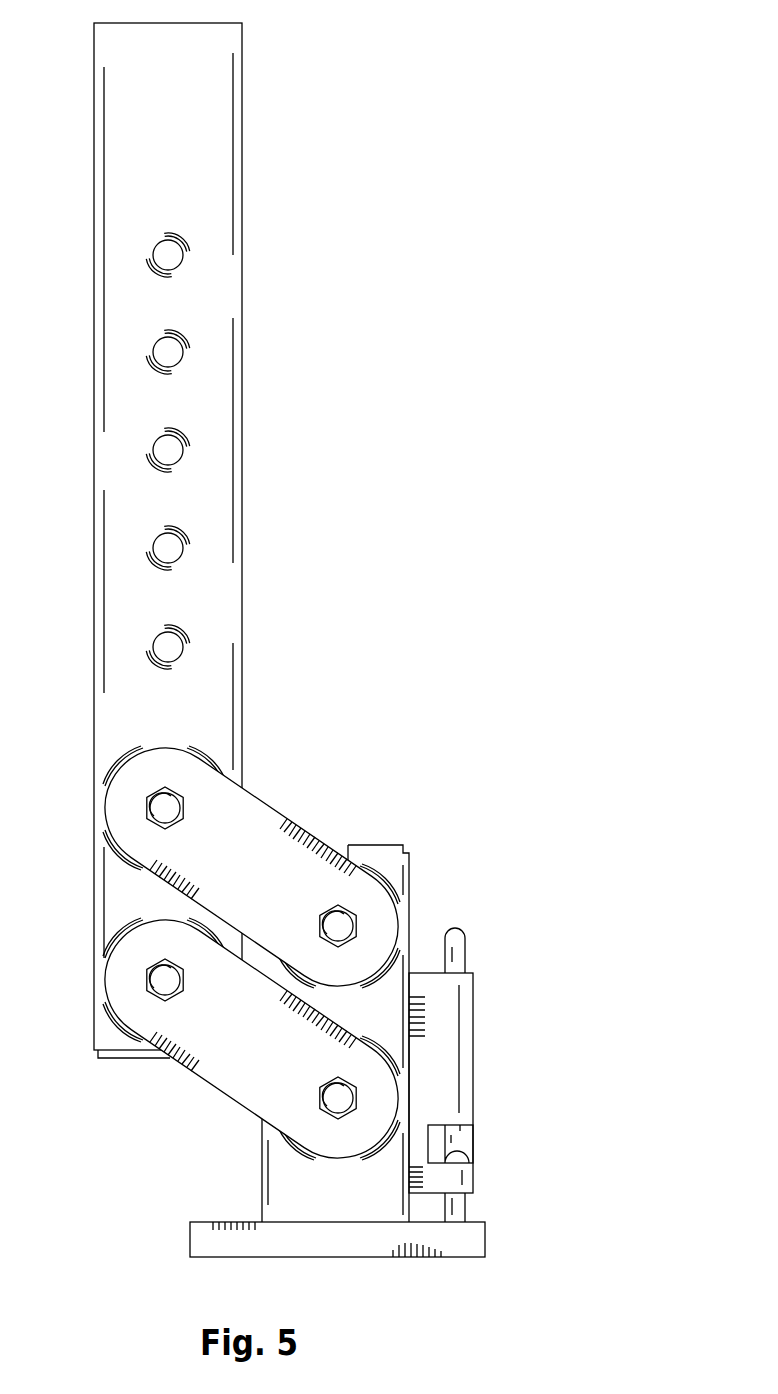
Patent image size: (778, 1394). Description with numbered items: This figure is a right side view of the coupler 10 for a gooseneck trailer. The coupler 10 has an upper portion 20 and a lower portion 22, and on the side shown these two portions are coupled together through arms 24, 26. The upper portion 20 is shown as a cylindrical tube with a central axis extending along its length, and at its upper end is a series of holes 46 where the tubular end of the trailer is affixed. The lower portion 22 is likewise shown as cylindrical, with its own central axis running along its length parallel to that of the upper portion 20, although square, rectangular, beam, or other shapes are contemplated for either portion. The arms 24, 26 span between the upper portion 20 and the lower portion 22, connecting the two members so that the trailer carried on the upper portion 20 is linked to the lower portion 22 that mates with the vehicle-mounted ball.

The coupler 10 is at (576, 188).
The upper portion 20 is at (276, 290).
The lower portion 22 is at (430, 886).
The arm 24 is at (258, 823).
The arm 26 is at (233, 1080).
The holes 46 is at (152, 252).